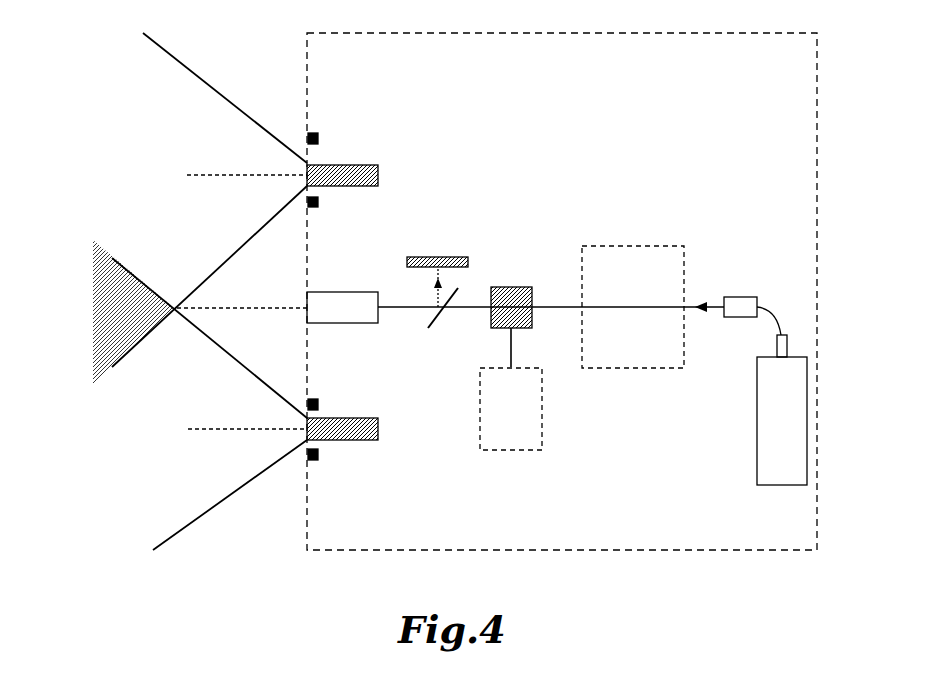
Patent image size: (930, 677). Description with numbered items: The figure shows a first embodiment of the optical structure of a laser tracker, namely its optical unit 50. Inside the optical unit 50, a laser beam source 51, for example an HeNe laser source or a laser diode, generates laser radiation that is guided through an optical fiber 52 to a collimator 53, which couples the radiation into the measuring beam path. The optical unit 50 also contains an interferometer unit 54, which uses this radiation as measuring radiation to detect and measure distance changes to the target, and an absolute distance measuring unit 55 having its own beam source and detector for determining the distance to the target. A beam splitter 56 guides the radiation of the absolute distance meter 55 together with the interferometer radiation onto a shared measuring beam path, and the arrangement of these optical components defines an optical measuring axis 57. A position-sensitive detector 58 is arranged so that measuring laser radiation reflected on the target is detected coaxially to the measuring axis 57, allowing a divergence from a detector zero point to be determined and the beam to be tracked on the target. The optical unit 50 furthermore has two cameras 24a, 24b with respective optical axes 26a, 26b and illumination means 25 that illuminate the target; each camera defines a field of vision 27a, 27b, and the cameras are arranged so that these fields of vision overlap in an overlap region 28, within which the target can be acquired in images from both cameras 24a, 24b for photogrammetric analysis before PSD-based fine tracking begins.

The optical unit 50 is at (797, 77).
The field of vision 27a is at (207, 85).
The field of vision 27b is at (193, 518).
The optical axis 26a is at (210, 173).
The optical axis 26b is at (210, 430).
The camera 24a is at (362, 175).
The camera 24b is at (367, 433).
The illumination means 25 is at (308, 135).
The overlap region 28 is at (108, 312).
The optical measuring axis 57 is at (230, 308).
The position-sensitive detector 58 is at (443, 257).
The beam splitter 56 is at (507, 290).
The absolute distance measuring unit 55 is at (532, 432).
The interferometer unit 54 is at (670, 258).
The collimator 53 is at (737, 302).
The optical fiber 52 is at (780, 320).
The laser beam source 51 is at (800, 433).